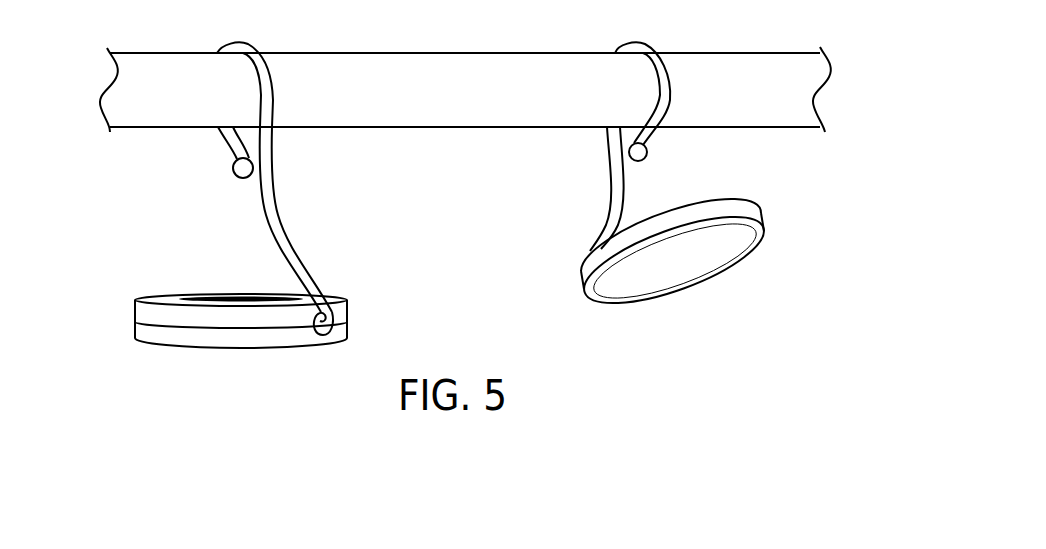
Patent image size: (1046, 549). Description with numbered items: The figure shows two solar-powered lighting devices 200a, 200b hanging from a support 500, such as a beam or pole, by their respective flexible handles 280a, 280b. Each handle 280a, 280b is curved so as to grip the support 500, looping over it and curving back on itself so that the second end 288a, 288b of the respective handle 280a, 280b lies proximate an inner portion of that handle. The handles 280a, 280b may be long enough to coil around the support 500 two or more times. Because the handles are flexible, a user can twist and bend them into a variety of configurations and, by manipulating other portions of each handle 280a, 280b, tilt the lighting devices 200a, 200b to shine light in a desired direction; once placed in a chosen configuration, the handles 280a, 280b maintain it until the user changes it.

The support 500 is at (738, 74).
The handle 280a is at (277, 205).
The second end 288a is at (234, 171).
The solar-powered lighting device 200a is at (120, 280).
The handle 280b is at (610, 186).
The second end 288b is at (647, 156).
The solar-powered lighting device 200b is at (752, 271).